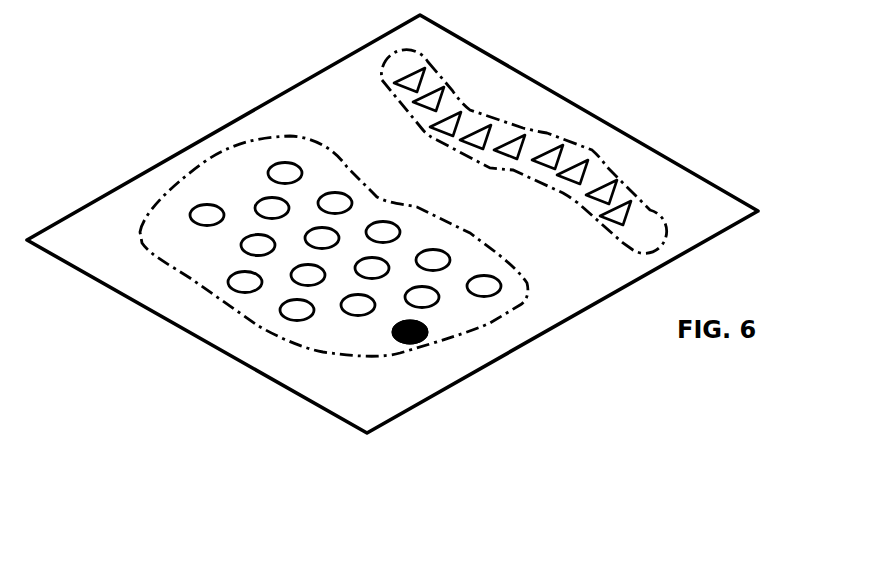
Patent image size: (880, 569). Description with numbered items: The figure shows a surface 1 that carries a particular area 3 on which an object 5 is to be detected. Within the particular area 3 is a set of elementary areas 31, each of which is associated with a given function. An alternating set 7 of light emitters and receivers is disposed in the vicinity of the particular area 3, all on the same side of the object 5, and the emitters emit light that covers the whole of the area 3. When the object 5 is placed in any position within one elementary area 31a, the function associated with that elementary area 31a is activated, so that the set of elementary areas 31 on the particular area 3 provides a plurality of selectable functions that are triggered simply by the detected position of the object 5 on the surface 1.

The surface 1 is at (117, 210).
The particular area 3 is at (487, 247).
The elementary areas 31 is at (334, 194).
The elementary area 31a is at (422, 325).
The object 5 is at (405, 323).
The alternating set of emitters and receivers 7 is at (653, 208).